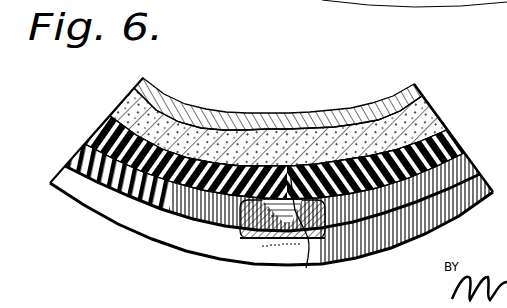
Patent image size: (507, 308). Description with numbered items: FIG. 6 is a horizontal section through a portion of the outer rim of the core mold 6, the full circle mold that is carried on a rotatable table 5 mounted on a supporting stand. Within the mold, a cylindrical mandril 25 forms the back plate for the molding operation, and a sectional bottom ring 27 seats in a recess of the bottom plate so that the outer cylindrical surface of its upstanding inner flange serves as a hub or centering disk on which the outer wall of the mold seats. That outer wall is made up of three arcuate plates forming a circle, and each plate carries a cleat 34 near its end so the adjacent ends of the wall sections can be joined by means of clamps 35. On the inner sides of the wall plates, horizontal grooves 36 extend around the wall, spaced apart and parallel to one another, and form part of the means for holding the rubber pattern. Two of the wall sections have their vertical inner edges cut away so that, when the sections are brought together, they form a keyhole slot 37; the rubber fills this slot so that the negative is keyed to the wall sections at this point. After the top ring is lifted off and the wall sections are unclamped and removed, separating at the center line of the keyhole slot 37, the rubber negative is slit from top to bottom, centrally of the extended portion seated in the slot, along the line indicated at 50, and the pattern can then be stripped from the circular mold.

The rotatable table 5 is at (110, 225).
The core mold 6 is at (465, 174).
The cylindrical mandril 25 is at (287, 127).
The bottom ring 27 is at (173, 190).
The cleat 34 is at (286, 168).
The clamp 35 is at (309, 228).
The grooves 36 is at (455, 149).
The keyhole slot 37 is at (303, 172).
The slitting line 50 is at (289, 184).